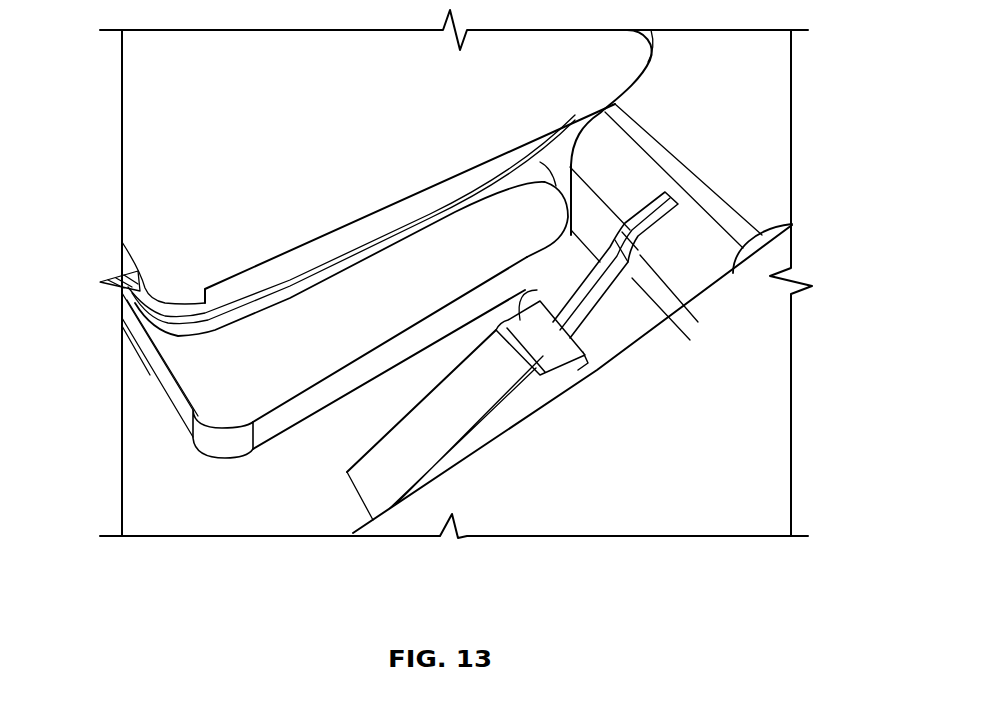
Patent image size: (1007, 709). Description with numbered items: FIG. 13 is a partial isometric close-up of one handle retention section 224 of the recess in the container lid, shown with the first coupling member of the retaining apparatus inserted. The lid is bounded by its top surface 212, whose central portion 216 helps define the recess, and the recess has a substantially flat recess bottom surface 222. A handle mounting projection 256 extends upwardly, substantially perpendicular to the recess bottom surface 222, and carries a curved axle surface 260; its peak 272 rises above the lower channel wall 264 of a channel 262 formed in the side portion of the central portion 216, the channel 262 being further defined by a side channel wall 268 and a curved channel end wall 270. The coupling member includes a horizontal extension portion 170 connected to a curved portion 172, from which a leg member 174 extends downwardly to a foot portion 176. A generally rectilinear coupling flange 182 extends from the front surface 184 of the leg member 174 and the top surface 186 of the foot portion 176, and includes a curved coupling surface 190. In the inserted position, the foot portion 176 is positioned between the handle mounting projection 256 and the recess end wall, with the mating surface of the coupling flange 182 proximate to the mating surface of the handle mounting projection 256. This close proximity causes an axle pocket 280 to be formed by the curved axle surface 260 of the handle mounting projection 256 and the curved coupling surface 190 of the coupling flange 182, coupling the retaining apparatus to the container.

The horizontal extension portion 170 is at (775, 78).
The curved portion 172 is at (722, 213).
The leg member 174 is at (682, 288).
The foot portion 176 is at (633, 332).
The coupling flange 182 is at (621, 262).
The front surface 184 is at (586, 158).
The top surface 186 is at (555, 287).
The curved coupling surface 190 is at (662, 316).
The top surface 212 is at (140, 180).
The central portion 216 is at (266, 100).
The recess bottom surface 222 is at (130, 498).
The handle retention section 224 is at (303, 456).
The handle mounting projection 256 is at (415, 435).
The curved axle surface 260 is at (573, 373).
The channel 262 is at (206, 350).
The lower channel wall 264 is at (208, 377).
The side channel wall 268 is at (175, 332).
The curved channel end wall 270 is at (548, 180).
The peak 272 is at (543, 360).
The axle pocket 280 is at (541, 273).